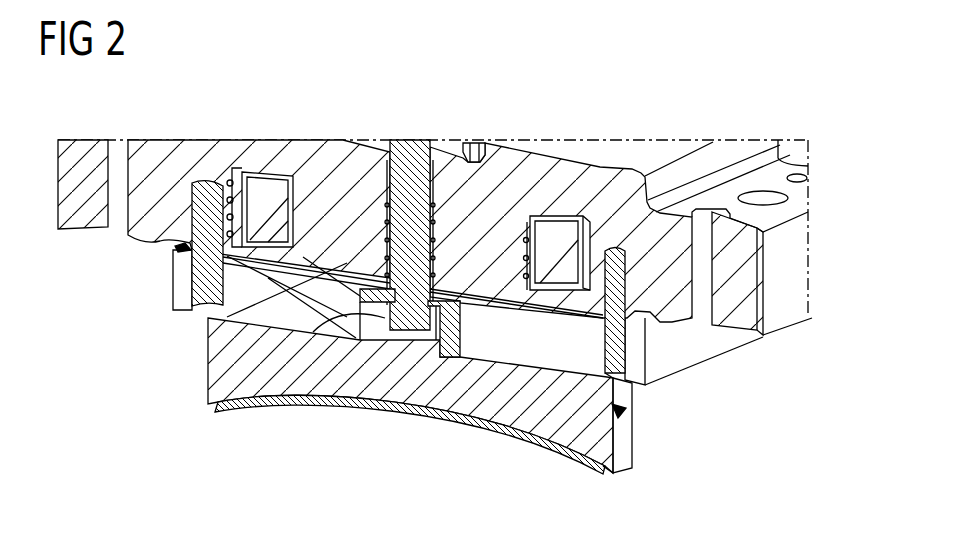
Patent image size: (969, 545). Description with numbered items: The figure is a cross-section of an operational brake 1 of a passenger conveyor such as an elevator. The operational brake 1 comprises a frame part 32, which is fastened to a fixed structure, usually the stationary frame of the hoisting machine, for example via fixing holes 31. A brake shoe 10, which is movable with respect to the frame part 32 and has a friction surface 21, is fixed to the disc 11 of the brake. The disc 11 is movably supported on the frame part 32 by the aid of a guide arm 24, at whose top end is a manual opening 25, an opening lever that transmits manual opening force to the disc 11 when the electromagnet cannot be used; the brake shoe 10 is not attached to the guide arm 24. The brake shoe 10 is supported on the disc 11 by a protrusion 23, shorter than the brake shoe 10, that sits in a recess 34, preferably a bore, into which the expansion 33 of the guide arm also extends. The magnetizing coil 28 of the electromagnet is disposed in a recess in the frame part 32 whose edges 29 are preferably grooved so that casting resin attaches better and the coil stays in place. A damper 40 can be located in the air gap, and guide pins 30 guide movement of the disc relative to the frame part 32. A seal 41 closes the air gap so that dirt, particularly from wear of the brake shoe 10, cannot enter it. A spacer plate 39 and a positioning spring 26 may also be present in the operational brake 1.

The operational brake 1 is at (747, 466).
The brake shoe 10 is at (618, 410).
The disc 11 is at (557, 350).
The friction surface 21 is at (272, 412).
The protrusion 23 is at (392, 320).
The guide arm 24 is at (408, 148).
The manual opening 25 is at (465, 150).
The positioning spring 26 is at (240, 320).
The magnetizing coil 28 is at (545, 218).
The edges 29 is at (233, 170).
The guide pins 30 is at (203, 200).
The fixing holes 31 is at (117, 152).
The frame part 32 is at (333, 150).
The expansion 33 is at (405, 305).
The recess 34 is at (285, 348).
The spacer plate 39 is at (440, 315).
The damper 40 is at (513, 300).
The seal 41 is at (187, 245).